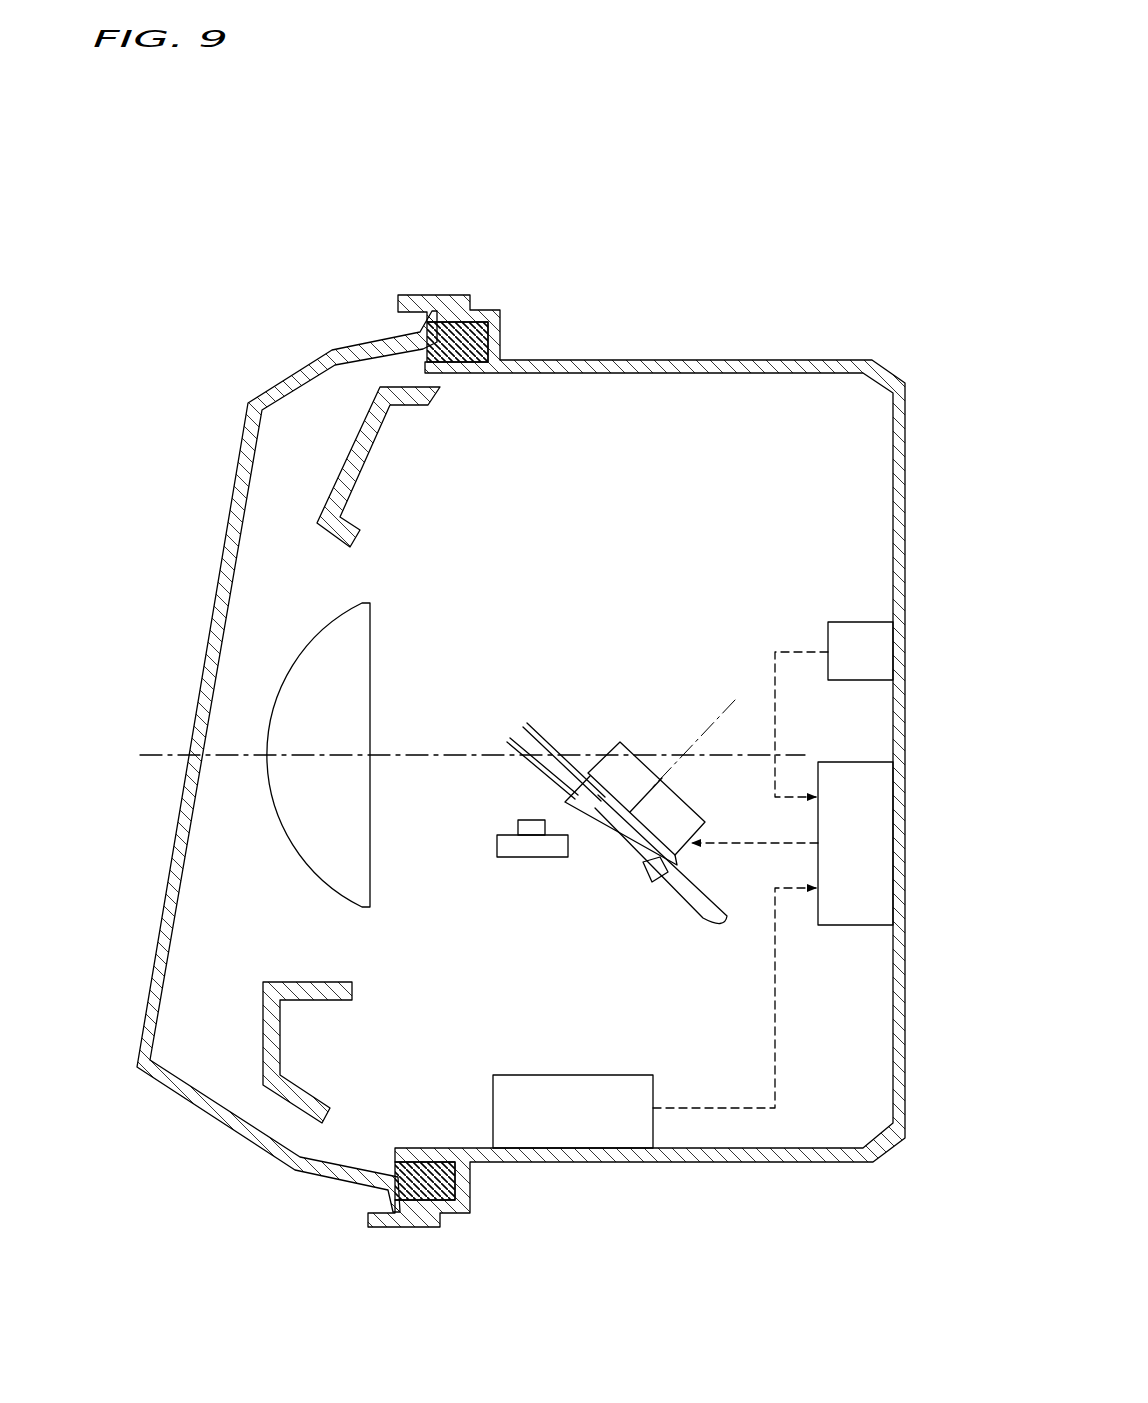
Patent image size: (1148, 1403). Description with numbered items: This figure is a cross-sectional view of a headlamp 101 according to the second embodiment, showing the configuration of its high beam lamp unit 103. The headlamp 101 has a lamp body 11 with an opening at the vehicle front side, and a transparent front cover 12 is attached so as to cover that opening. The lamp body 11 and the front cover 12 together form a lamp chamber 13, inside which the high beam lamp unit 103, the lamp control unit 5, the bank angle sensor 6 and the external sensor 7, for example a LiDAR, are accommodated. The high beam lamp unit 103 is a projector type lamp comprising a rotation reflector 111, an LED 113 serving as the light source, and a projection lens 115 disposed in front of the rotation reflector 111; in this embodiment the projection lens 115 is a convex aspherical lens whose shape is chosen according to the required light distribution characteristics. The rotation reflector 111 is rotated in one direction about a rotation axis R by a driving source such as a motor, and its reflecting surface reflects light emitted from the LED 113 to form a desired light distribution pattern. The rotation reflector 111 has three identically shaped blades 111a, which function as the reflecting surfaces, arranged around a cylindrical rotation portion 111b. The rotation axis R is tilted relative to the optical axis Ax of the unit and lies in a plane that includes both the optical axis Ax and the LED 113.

The headlamp 101 is at (305, 243).
The lamp body 11 is at (801, 360).
The front cover 12 is at (304, 365).
The lamp chamber 13 is at (604, 430).
The high beam lamp unit 103 is at (291, 590).
The projection lens 115 is at (303, 652).
The rotation reflector 111 is at (628, 742).
The blade 111a is at (649, 866).
The rotation portion 111b is at (687, 880).
The LED 113 is at (537, 857).
The bank angle sensor 6 is at (854, 622).
The lamp control unit 5 is at (840, 930).
The external sensor 7 is at (541, 1082).
The optical axis Ax is at (455, 756).
The rotation axis R is at (690, 752).